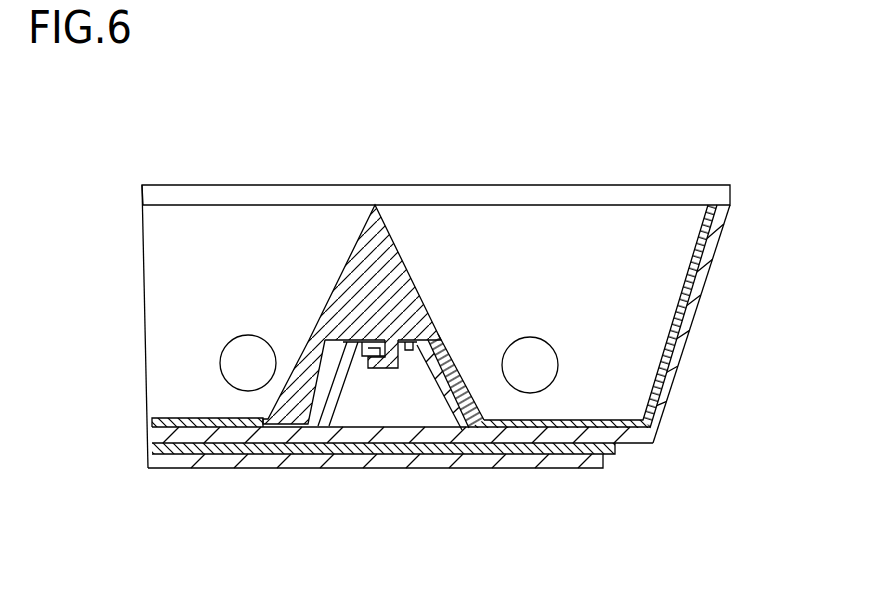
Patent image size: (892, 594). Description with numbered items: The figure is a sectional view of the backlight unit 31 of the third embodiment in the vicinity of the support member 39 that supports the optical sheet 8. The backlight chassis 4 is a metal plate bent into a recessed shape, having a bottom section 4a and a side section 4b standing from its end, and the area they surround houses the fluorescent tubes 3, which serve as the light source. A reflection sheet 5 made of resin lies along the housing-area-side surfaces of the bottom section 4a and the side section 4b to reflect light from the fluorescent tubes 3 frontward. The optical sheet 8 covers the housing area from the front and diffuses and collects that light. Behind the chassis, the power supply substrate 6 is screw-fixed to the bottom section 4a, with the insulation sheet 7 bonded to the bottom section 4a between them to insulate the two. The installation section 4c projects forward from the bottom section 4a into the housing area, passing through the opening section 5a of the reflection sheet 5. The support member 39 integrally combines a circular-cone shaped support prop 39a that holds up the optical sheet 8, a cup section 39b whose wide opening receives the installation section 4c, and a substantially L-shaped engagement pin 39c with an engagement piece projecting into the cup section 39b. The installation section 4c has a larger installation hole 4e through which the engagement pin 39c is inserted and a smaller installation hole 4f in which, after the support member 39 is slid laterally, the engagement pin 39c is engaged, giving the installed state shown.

The backlight unit 31 is at (693, 159).
The optical sheet 8 is at (737, 196).
The fluorescent tube 3 is at (245, 336).
The support member 39 is at (339, 269).
The support prop 39a is at (388, 246).
The cup section 39b is at (458, 366).
The engagement pin 39c is at (380, 368).
The reflection sheet 5 is at (694, 292).
The opening section 5a is at (267, 428).
The backlight chassis 4 is at (688, 342).
The bottom section 4a is at (623, 445).
The side section 4b is at (673, 376).
The installation section 4c is at (443, 412).
The larger installation hole 4e is at (408, 346).
The smaller installation hole 4f is at (370, 343).
The insulation sheet 7 is at (558, 448).
The power supply substrate 6 is at (520, 460).